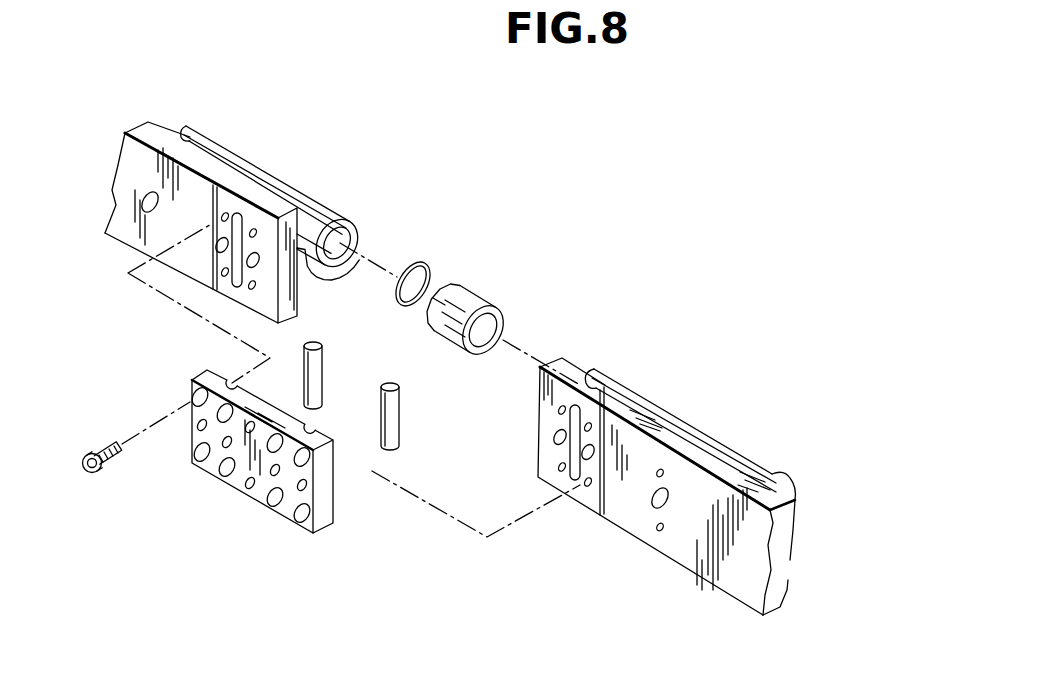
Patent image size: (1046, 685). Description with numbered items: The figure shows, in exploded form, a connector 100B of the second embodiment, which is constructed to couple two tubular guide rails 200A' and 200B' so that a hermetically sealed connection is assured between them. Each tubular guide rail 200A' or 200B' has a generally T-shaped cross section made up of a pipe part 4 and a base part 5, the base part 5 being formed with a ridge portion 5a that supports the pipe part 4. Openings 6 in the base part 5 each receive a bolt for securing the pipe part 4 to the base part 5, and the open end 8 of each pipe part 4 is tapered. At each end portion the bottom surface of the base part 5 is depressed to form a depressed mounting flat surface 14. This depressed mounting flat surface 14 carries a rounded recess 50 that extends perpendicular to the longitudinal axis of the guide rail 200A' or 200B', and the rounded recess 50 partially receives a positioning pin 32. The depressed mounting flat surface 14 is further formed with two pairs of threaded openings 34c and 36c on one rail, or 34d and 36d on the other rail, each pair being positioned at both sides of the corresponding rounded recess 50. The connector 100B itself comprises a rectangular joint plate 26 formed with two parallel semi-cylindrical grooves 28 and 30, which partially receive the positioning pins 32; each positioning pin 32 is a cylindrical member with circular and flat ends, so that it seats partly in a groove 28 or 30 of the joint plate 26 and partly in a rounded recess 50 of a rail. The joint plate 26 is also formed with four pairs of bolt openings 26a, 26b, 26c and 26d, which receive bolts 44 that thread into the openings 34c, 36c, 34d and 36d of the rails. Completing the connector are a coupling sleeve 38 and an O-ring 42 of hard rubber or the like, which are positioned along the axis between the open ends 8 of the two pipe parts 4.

The tubular guide rail 200A' is at (251, 164).
The tubular guide rail 200B' is at (702, 334).
The connector 100B is at (528, 224).
The pipe part 4 is at (320, 200).
The base part 5 is at (127, 233).
The ridge portion 5a is at (312, 266).
The openings 6 is at (147, 197).
The open end 8 is at (335, 236).
The depressed mounting flat surface 14 is at (239, 205).
The joint plate 26 is at (242, 495).
The bolt openings 26a is at (196, 399).
The bolt openings 26b is at (305, 514).
The bolt openings 26c is at (223, 475).
The bolt openings 26d is at (302, 516).
The groove 28 is at (226, 380).
The groove 30 is at (311, 430).
The positioning pin 32 is at (318, 365).
The threaded openings 34c is at (225, 212).
The threaded openings 34d is at (563, 406).
The threaded openings 36c is at (250, 288).
The threaded openings 36d is at (559, 466).
The coupling sleeve 38 is at (464, 300).
The O-ring 42 is at (427, 264).
The bolts 44 is at (99, 477).
The rounded recess 50 is at (242, 214).